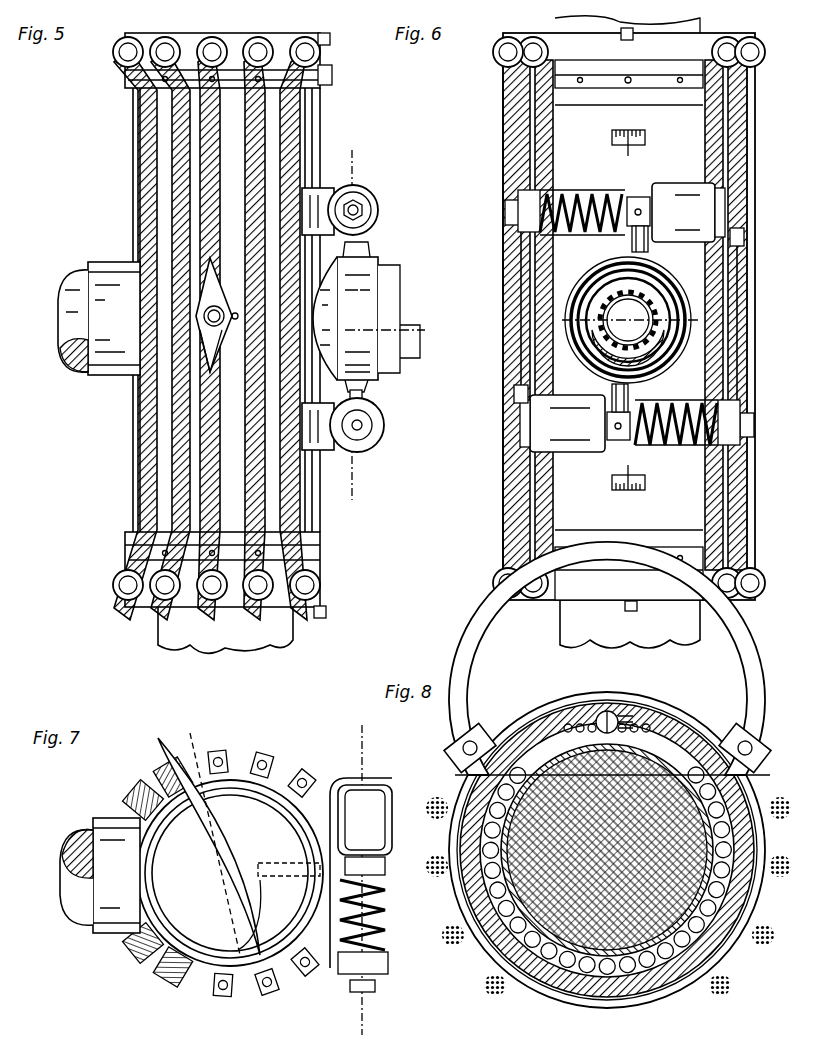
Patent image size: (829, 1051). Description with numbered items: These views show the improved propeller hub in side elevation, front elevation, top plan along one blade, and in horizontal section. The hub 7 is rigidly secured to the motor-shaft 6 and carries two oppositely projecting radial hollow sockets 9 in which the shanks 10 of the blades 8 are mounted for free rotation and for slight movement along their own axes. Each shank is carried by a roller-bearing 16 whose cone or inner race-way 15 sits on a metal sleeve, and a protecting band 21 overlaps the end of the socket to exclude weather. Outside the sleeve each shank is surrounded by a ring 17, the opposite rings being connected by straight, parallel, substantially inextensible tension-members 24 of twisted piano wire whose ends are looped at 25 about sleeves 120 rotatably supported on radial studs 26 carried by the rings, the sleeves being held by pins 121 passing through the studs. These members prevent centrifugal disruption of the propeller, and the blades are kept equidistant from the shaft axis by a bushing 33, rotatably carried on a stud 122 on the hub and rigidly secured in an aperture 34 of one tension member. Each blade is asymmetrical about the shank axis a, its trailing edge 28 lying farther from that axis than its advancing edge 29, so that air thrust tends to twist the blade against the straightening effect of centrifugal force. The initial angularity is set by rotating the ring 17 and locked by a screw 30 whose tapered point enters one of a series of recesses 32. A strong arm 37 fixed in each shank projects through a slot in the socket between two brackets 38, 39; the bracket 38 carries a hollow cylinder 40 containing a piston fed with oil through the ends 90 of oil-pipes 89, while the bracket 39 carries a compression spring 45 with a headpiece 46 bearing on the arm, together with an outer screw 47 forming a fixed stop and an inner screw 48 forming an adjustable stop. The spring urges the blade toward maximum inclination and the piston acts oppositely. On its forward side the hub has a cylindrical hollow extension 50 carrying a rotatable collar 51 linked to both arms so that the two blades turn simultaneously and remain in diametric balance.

In FIG. 5, the motor-shaft 6 is at (70, 272).
In FIG. 7, the motor-shaft 6 is at (78, 832).
In FIG. 5, the hub 7 is at (105, 262).
In FIG. 7, the hub 7 is at (108, 818).
In FIG. 5, the blades 8 is at (290, 40).
In FIG. 6, the blades 8 is at (685, 38).
In FIG. 7, the blades 8 is at (215, 844).
In FIG. 5, the sockets 9 is at (133, 128).
In FIG. 6, the sockets 9 is at (629, 316).
In FIG. 7, the sockets 9 is at (287, 775).
In FIG. 8, the sockets 9 is at (722, 944).
In FIG. 8, the shanks 10 is at (607, 850).
In FIG. 8, the cone or inner race-way 15 is at (508, 902).
In FIG. 8, the roller-bearing 16 is at (700, 992).
In FIG. 5, the ring 17 is at (320, 45).
In FIG. 6, the ring 17 is at (618, 40).
In FIG. 7, the ring 17 is at (152, 900).
In FIG. 8, the ring 17 is at (660, 722).
In FIG. 5, the protecting band 21 is at (332, 78).
In FIG. 6, the protecting band 21 is at (605, 73).
In FIG. 8, the protecting band 21 is at (700, 986).
In FIG. 5, the tension-members 24 is at (147, 168).
In FIG. 6, the tension-members 24 is at (506, 140).
In FIG. 8, the tension-members 24 is at (777, 860).
In FIG. 5, the looped ends 25 is at (205, 47).
In FIG. 6, the looped ends 25 is at (550, 40).
In FIG. 7, the looped ends 25 is at (214, 992).
In FIG. 5, the studs 26 is at (262, 42).
In FIG. 6, the studs 26 is at (503, 54).
In FIG. 7, the studs 26 is at (273, 992).
In FIG. 8, the studs 26 is at (770, 748).
In FIG. 7, the trailing edge 28 is at (200, 837).
In FIG. 7, the advancing edge 29 is at (270, 950).
In FIG. 5, the screw 30 is at (320, 36).
In FIG. 6, the screw 30 is at (636, 32).
In FIG. 8, the screw 30 is at (614, 714).
In FIG. 8, the recesses 32 is at (582, 722).
In FIG. 5, the bushing 33 is at (205, 292).
In FIG. 5, the aperture 34 is at (212, 342).
In FIG. 6, the arm 37 is at (640, 197).
In FIG. 7, the arm 37 is at (372, 864).
In FIG. 5, the bracket 38 is at (328, 452).
In FIG. 6, the bracket 38 is at (728, 200).
In FIG. 7, the bracket 38 is at (348, 782).
In FIG. 5, the bracket 39 is at (323, 198).
In FIG. 6, the bracket 39 is at (518, 196).
In FIG. 7, the bracket 39 is at (338, 968).
In FIG. 5, the hollow cylinder 40 is at (370, 450).
In FIG. 6, the hollow cylinder 40 is at (685, 183).
In FIG. 7, the hollow cylinder 40 is at (393, 795).
In FIG. 6, the compression spring 45 is at (580, 190).
In FIG. 7, the compression spring 45 is at (388, 942).
In FIG. 6, the headpiece 46 is at (627, 319).
In FIG. 5, the outer screw 47 is at (370, 210).
In FIG. 6, the outer screw 47 is at (558, 240).
In FIG. 7, the outer screw 47 is at (388, 966).
In FIG. 5, the inner screw 48 is at (362, 228).
In FIG. 6, the inner screw 48 is at (506, 216).
In FIG. 7, the inner screw 48 is at (375, 990).
In FIG. 5, the hollow extension 50 is at (327, 318).
In FIG. 6, the hollow extension 50 is at (592, 352).
In FIG. 5, the collar 51 is at (381, 311).
In FIG. 6, the collar 51 is at (672, 283).
In FIG. 6, the oil-pipes 89 is at (738, 262).
In FIG. 5, the ends of oil-pipes 90 is at (366, 395).
In FIG. 6, the ends of oil-pipes 90 is at (744, 237).
In FIG. 5, the sleeves 120 is at (130, 38).
In FIG. 6, the sleeves 120 is at (732, 40).
In FIG. 5, the pins 121 is at (153, 34).
In FIG. 6, the pins 121 is at (752, 62).
In FIG. 5, the stud 122 is at (204, 316).
In FIG. 6, the stud 122 is at (645, 140).
In FIG. 7, the axis a is at (235, 876).